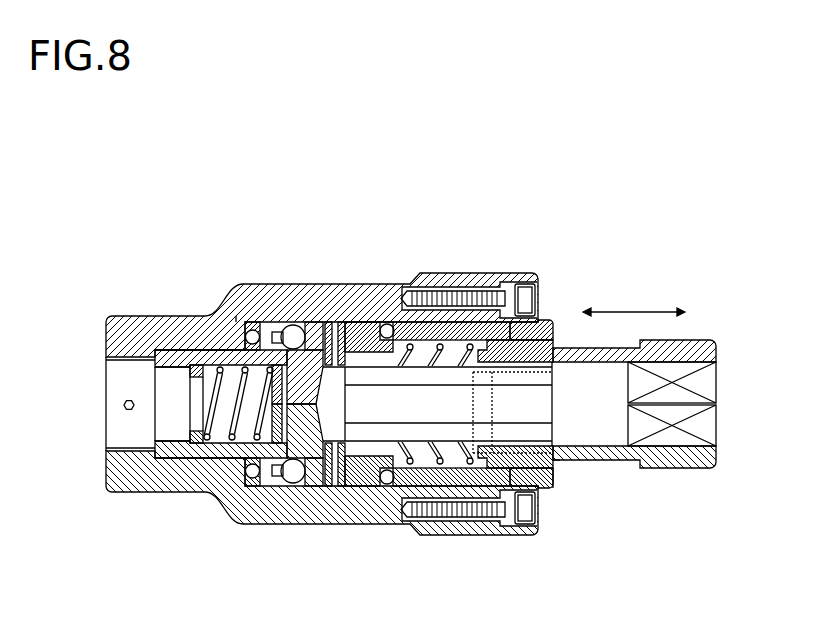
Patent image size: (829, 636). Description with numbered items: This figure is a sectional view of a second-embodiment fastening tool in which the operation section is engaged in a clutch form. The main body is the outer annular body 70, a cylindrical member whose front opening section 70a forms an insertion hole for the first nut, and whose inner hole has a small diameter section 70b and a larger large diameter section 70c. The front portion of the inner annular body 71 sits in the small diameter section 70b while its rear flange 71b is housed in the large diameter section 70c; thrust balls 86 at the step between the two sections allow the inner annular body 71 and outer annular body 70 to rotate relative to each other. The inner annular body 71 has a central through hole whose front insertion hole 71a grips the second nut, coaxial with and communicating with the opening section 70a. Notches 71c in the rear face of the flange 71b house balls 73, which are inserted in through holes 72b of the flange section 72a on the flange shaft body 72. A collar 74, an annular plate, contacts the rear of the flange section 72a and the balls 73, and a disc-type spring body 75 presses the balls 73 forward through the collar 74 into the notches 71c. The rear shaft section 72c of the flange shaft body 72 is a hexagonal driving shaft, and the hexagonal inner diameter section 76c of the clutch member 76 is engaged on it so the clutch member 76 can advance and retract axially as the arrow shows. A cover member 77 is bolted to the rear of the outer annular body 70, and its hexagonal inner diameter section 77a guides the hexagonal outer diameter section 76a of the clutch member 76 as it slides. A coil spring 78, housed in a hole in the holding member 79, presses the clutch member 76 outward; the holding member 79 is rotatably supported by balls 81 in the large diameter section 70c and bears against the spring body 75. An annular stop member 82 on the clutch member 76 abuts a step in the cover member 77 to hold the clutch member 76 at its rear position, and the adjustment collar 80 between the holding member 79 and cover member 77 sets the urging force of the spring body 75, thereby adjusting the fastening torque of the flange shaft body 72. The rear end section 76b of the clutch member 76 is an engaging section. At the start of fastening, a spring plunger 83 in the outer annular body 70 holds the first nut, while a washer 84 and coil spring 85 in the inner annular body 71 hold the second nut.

The outer annular body 70 is at (336, 285).
The opening section 70a is at (118, 360).
The small diameter section 70b is at (177, 350).
The large diameter section 70c is at (366, 322).
The inner annular body 71 is at (146, 491).
The insertion hole 71a is at (158, 368).
The flange 71b is at (262, 487).
The notches 71c is at (252, 329).
The flange shaft body 72 is at (366, 486).
The flange section 72a is at (300, 480).
The through holes 72b is at (286, 480).
The shaft section 72c is at (463, 435).
The balls 73 is at (294, 325).
The collar 74 is at (312, 488).
The spring body 75 is at (328, 322).
The clutch member 76 is at (608, 461).
The outer diameter section 76a is at (548, 489).
The rear end section 76b is at (684, 364).
The inner diameter section 76c is at (553, 466).
The cover member 77 is at (543, 320).
The inner diameter section 77a is at (556, 347).
The coil spring 78 is at (395, 486).
The holding member 79 is at (342, 486).
The adjustment collar 80 is at (440, 290).
The balls 81 is at (388, 324).
The stop member 82 is at (492, 338).
The spring plunger 83 is at (124, 405).
The washer 84 is at (172, 462).
The coil spring 85 is at (203, 467).
The thrust balls 86 is at (238, 321).